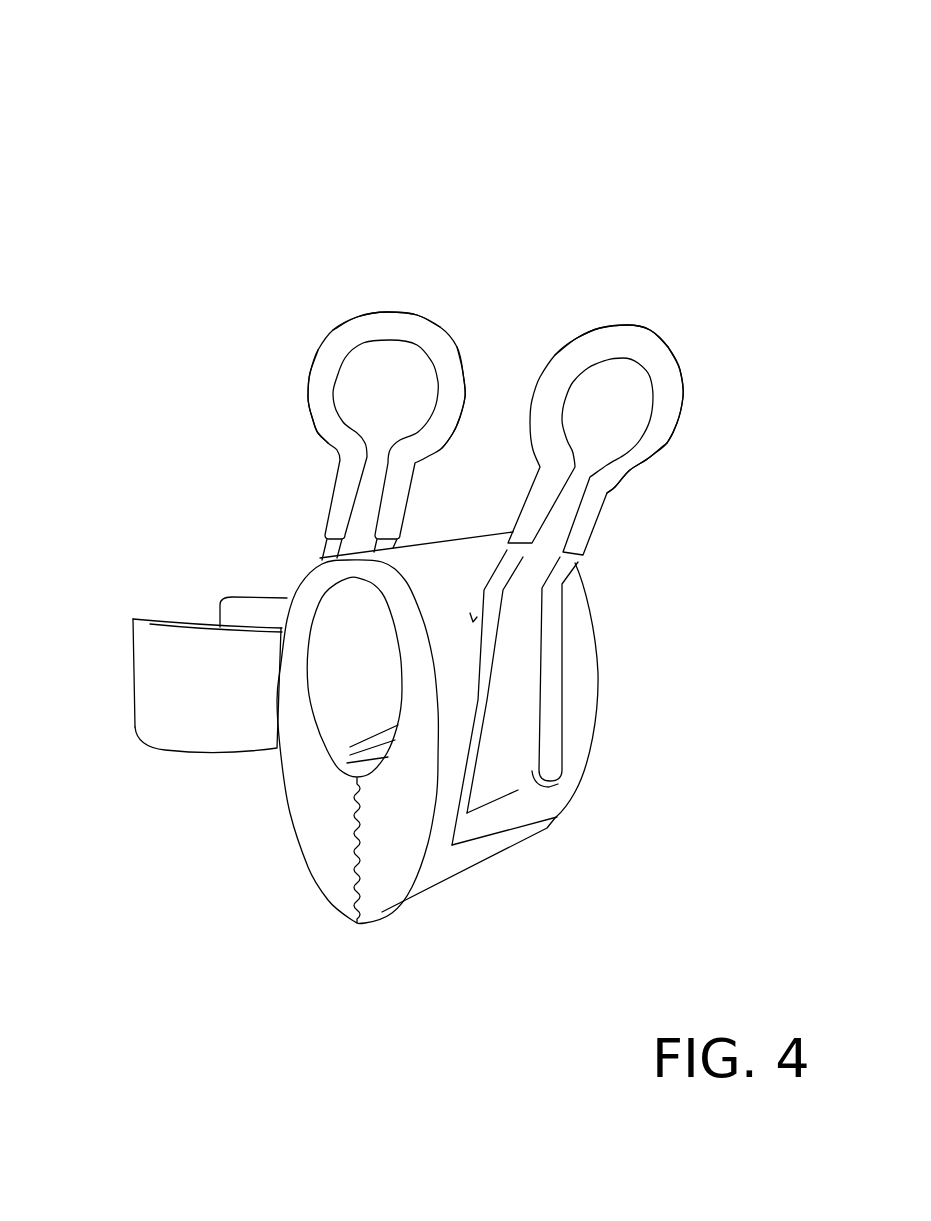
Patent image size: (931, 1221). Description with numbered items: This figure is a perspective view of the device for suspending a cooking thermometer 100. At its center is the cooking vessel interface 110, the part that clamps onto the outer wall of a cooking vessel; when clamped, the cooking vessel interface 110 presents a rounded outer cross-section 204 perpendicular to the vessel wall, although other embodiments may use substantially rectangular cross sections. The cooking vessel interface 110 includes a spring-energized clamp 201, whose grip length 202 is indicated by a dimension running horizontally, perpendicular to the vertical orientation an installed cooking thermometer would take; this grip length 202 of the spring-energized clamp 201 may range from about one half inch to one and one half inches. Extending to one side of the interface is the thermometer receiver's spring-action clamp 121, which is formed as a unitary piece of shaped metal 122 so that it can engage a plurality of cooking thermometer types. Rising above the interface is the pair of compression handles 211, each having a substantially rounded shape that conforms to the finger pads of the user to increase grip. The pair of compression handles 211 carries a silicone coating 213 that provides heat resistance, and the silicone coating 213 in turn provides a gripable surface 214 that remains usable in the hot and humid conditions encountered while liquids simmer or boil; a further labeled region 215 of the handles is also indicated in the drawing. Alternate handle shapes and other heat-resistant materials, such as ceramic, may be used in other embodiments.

The device for suspending a cooking thermometer 100 is at (616, 100).
The cooking vessel interface 110 is at (312, 590).
The spring-action clamp 121 is at (150, 660).
The unitary piece of shaped metal 122 is at (153, 718).
The spring-energized clamp 201 is at (523, 647).
The grip length 202 is at (562, 845).
The rounded outer cross-section 204 is at (293, 765).
The pair of compression handles 211 is at (325, 378).
The silicone coating 213 is at (383, 321).
The gripable surface 214 is at (442, 408).
The loop left side 215 is at (335, 412).